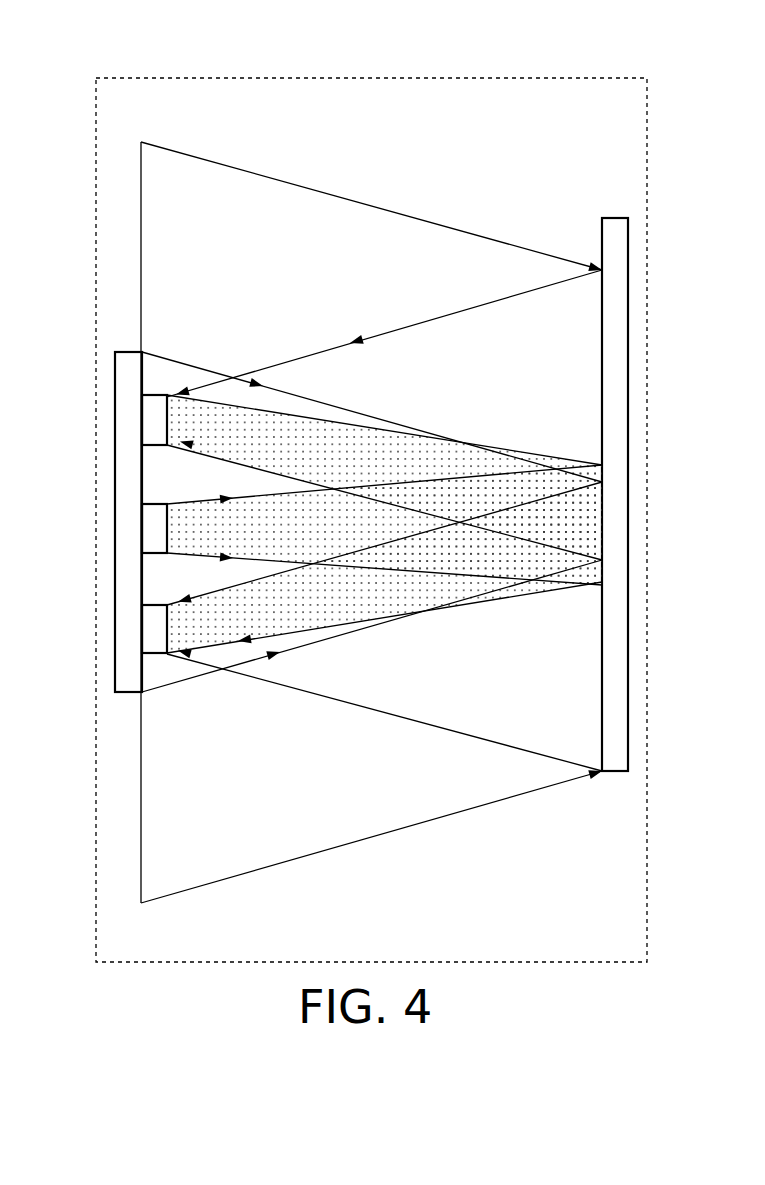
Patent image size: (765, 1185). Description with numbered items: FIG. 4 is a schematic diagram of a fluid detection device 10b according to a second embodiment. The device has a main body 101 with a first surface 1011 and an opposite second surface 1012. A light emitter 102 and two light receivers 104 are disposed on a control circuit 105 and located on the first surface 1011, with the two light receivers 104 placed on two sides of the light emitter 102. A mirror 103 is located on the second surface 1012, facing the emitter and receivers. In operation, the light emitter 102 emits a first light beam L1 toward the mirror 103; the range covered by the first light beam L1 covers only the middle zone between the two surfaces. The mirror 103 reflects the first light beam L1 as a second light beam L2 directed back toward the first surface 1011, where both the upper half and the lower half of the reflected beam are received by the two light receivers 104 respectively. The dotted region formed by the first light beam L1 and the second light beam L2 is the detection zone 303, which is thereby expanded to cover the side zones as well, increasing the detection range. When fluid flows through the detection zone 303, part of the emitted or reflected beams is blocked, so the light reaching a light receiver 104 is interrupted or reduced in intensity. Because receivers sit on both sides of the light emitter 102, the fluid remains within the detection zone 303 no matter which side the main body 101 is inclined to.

The fluid detection device 10b is at (86, 87).
The main body 101 is at (94, 200).
The first surface 1011 is at (150, 372).
The second surface 1012 is at (592, 219).
The mirror 103 is at (612, 352).
The control circuit 105 is at (132, 368).
The light receiver 104 is at (156, 410).
The light emitter 102 is at (152, 532).
The first light beam L1 is at (196, 500).
The second light beam L2 is at (303, 417).
The detection zone 303 is at (500, 560).